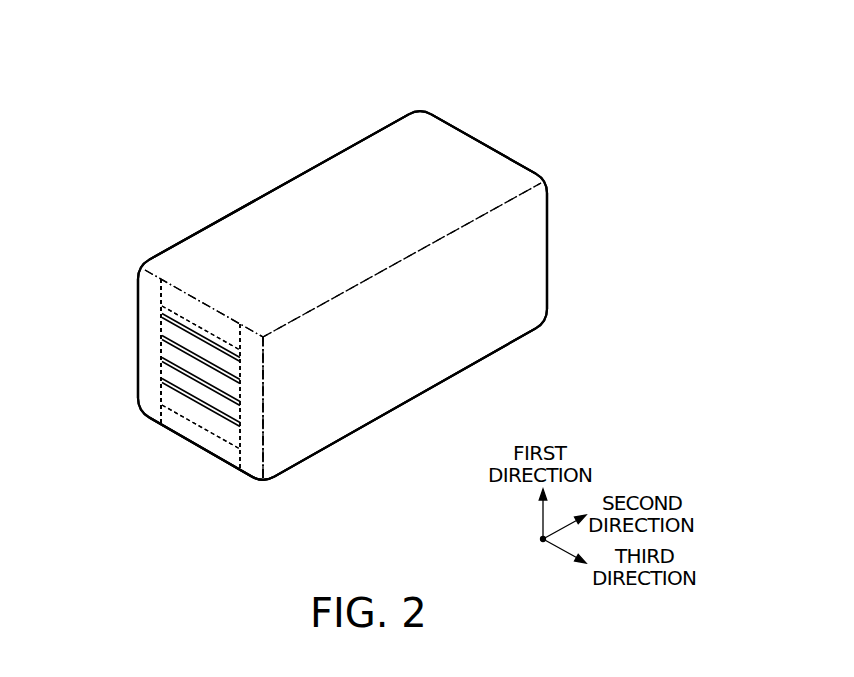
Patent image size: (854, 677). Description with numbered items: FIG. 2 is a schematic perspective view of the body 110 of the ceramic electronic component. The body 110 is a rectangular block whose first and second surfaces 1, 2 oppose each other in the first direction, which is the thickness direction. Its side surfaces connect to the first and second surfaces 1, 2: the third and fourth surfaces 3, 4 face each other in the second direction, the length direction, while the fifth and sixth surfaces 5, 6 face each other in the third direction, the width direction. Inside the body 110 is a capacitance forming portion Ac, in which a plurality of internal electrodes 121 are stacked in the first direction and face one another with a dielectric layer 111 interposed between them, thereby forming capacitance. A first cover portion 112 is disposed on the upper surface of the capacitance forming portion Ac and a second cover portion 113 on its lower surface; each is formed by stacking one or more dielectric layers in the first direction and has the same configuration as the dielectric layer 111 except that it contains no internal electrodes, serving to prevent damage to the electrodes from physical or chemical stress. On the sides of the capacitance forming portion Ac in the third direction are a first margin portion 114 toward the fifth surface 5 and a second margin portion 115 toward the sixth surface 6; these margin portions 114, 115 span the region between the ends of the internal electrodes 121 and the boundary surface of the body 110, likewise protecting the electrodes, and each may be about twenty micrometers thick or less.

The body 110 is at (150, 53).
The first surface 1 is at (370, 396).
The second surface 2 is at (371, 172).
The third surface 3 is at (200, 443).
The fourth surface 4 is at (473, 138).
The fifth surface 5 is at (236, 214).
The sixth surface 6 is at (483, 318).
The dielectric layer 111 is at (166, 375).
The first cover portion 112 is at (166, 297).
The second cover portion 113 is at (172, 420).
The first margin portion 114 is at (147, 388).
The second margin portion 115 is at (254, 462).
The first internal electrode 121 is at (166, 327).
The capacitance forming portion Ac is at (246, 414).